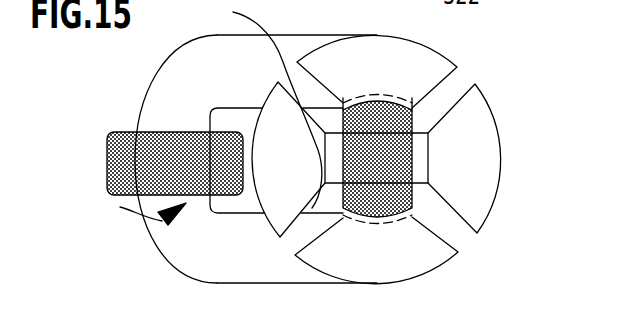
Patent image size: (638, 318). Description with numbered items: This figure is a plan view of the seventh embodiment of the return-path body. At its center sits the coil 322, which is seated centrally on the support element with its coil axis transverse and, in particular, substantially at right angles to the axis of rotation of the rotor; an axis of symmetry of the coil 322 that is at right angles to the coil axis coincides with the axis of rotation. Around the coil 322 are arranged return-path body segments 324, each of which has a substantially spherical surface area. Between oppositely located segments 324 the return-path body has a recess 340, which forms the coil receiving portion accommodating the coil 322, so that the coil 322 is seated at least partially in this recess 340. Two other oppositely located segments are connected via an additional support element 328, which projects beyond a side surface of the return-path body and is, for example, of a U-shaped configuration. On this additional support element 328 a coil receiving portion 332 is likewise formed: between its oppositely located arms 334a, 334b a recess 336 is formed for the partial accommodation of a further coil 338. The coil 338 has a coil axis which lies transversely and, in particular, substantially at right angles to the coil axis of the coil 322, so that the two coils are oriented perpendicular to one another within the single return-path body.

The coil 322 is at (393, 162).
The return-path body segments 324 is at (472, 185).
The additional support element 328 is at (207, 266).
The coil receiving portion 332 is at (120, 207).
The arm 334a is at (190, 101).
The arm 334b is at (196, 240).
The recess 336 is at (247, 199).
The coil 338 is at (128, 157).
The recess 340 is at (259, 104).